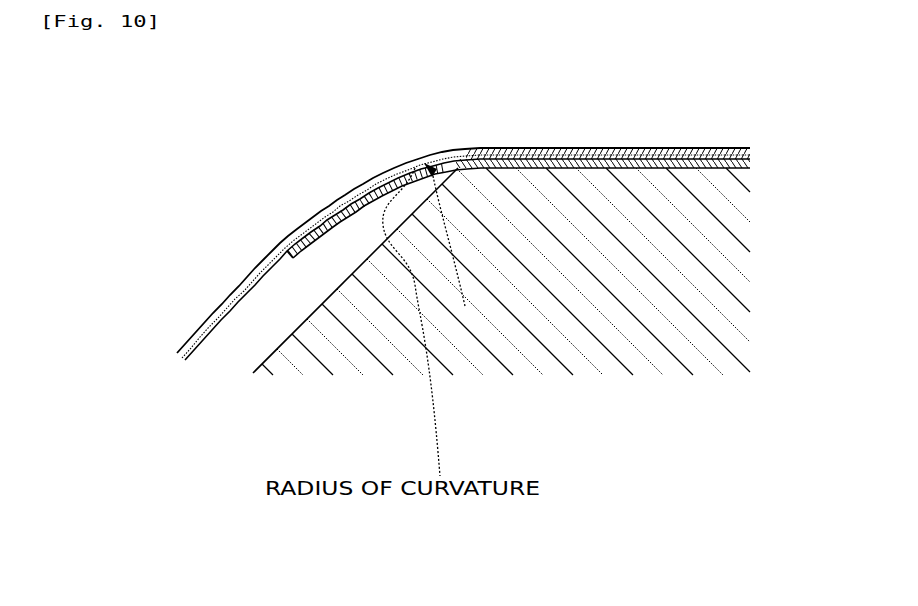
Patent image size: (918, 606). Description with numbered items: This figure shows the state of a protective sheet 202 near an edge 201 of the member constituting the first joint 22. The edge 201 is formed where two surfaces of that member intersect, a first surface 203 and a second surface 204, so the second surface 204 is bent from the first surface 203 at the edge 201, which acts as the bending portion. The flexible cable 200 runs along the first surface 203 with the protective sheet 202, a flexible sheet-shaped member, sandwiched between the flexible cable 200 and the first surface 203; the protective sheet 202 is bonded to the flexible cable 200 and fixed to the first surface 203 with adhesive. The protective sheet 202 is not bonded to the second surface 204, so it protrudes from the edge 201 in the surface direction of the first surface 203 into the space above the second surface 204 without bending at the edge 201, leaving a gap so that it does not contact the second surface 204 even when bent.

The first joint 22 is at (393, 342).
The flexible cable 200 is at (350, 182).
The edge 201 is at (527, 190).
The protective sheet 202 is at (317, 250).
The first surface 203 is at (672, 150).
The second surface 204 is at (427, 165).